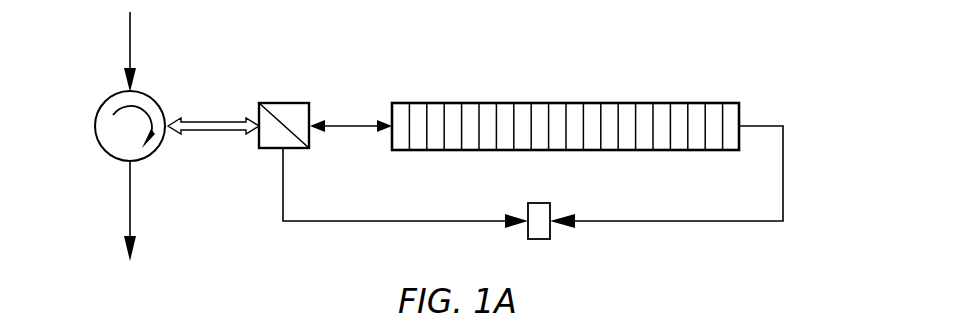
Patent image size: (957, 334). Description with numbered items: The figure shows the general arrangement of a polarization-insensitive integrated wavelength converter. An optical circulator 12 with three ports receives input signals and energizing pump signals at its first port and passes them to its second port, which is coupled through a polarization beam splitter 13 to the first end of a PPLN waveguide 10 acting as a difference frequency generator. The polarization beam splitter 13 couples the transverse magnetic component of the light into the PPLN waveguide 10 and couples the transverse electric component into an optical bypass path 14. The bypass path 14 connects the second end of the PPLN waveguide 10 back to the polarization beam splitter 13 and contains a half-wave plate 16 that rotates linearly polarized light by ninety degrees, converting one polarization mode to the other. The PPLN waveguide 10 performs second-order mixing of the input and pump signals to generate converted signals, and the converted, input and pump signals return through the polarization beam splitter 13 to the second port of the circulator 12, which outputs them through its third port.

The PPLN waveguide 10 is at (565, 105).
The optical circulator 12 is at (135, 134).
The polarization beam splitter 13 is at (320, 120).
The optical bypass path 14 is at (533, 196).
The half-wave plate 16 is at (552, 205).